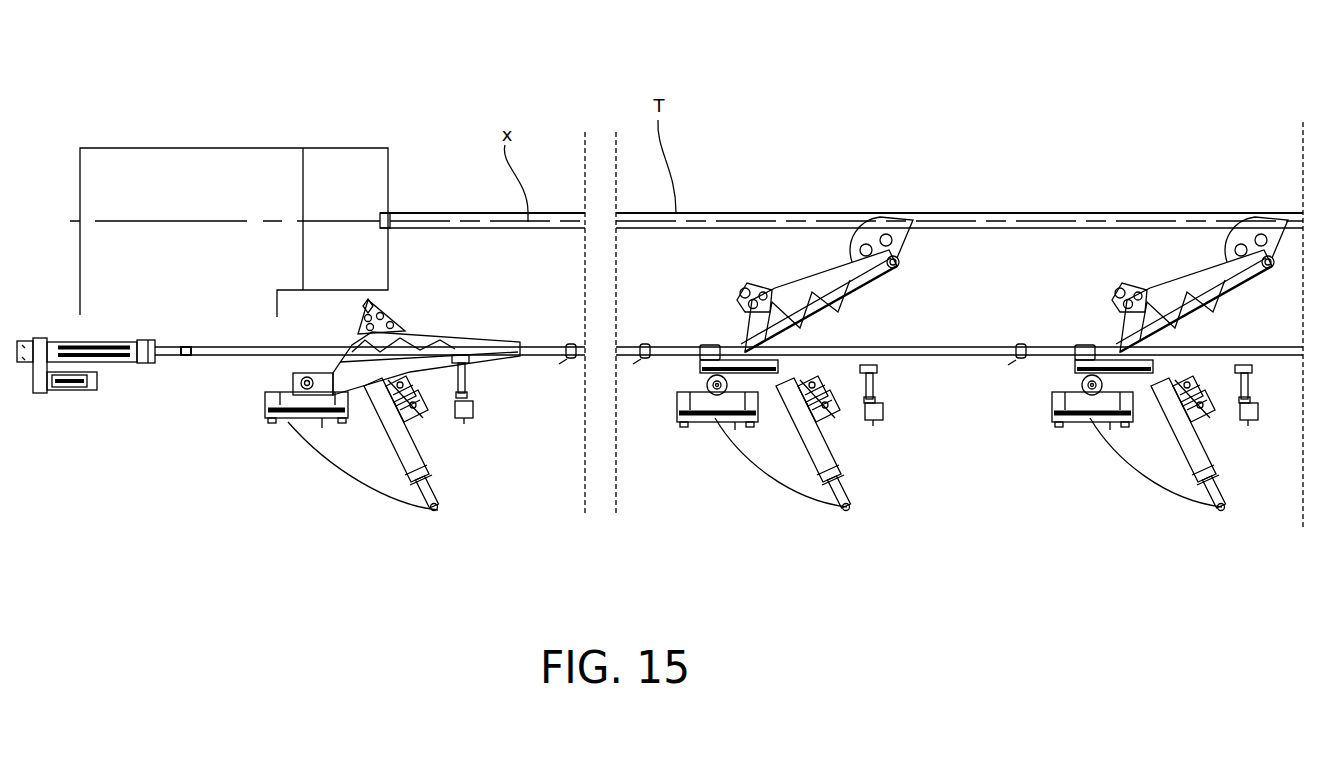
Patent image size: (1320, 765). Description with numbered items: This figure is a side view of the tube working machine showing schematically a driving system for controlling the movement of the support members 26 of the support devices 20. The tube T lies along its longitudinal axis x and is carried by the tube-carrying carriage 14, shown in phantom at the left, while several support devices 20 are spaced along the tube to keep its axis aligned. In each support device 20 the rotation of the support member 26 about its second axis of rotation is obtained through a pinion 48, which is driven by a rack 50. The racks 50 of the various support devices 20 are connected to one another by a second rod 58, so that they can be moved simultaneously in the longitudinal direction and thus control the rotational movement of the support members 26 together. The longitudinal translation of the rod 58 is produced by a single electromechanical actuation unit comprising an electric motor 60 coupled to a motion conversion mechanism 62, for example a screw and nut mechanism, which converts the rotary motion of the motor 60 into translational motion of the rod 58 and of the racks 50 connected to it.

The tube-carrying carriage 14 is at (250, 148).
The support device 20 is at (807, 268).
The support member 26 is at (856, 226).
The pinion 48 is at (716, 418).
The rack 50 is at (774, 390).
The second rod 58 is at (966, 357).
The electric motor 60 is at (70, 390).
The motion conversion mechanism 62 is at (78, 343).